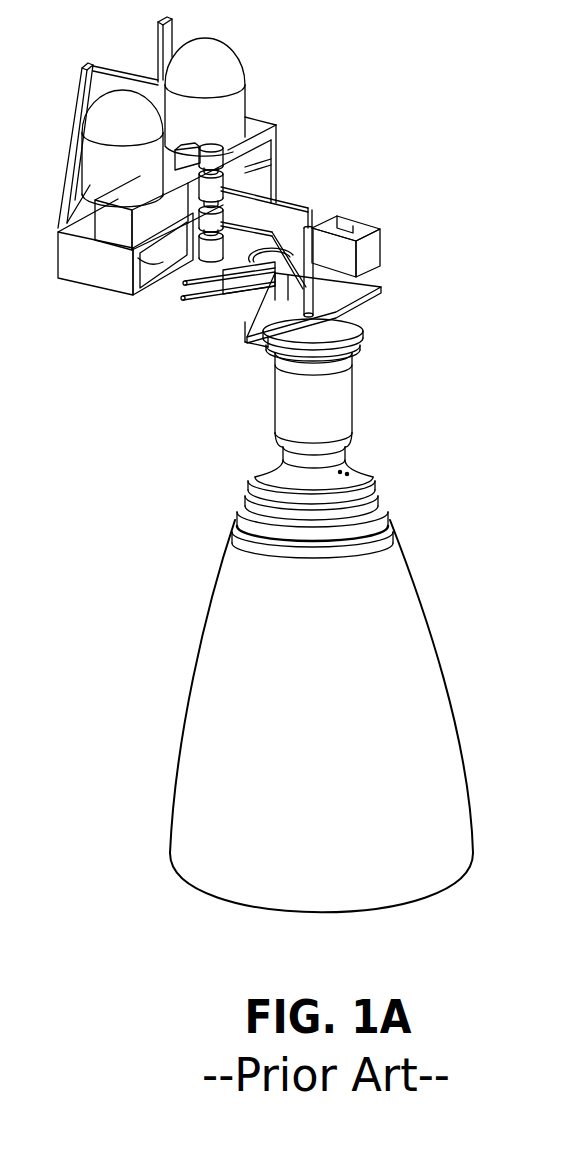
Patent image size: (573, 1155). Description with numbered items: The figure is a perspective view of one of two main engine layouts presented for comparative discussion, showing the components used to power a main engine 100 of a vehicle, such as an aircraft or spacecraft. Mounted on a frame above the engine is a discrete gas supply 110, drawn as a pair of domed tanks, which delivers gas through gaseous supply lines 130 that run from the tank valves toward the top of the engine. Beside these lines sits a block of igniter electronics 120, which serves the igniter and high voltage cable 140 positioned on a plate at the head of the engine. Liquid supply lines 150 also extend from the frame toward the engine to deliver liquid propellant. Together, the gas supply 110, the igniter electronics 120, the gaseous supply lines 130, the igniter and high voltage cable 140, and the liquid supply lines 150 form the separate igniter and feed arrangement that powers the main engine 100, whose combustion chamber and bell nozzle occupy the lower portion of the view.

The main engine 100 is at (452, 398).
The discrete gas supply 110 is at (233, 46).
The igniter electronics 120 is at (360, 223).
The gaseous supply lines 130 is at (308, 207).
The igniter and high voltage cable 140 is at (297, 292).
The liquid supply lines 150 is at (212, 292).